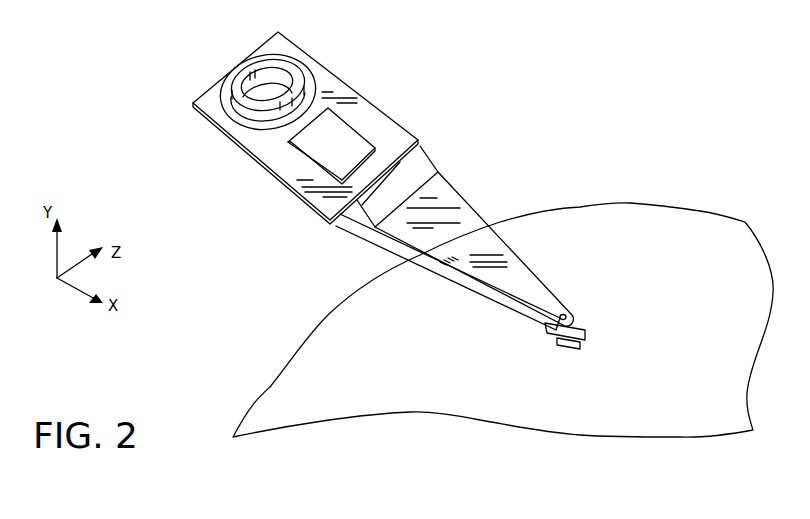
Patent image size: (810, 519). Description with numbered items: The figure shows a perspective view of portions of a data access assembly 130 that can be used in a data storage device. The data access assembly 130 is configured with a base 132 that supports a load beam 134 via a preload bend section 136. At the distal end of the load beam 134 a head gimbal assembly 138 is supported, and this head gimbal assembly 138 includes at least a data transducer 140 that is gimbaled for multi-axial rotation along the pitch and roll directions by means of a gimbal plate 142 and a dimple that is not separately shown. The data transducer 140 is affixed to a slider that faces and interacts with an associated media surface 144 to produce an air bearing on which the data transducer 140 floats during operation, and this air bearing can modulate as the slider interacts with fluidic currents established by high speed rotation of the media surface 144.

The data access assembly 130 is at (532, 104).
The base 132 is at (353, 88).
The load beam 134 is at (467, 184).
The preload bend section 136 is at (345, 241).
The head gimbal assembly 138 is at (591, 310).
The data transducer 140 is at (567, 348).
The gimbal plate 142 is at (587, 331).
The media surface 144 is at (640, 203).